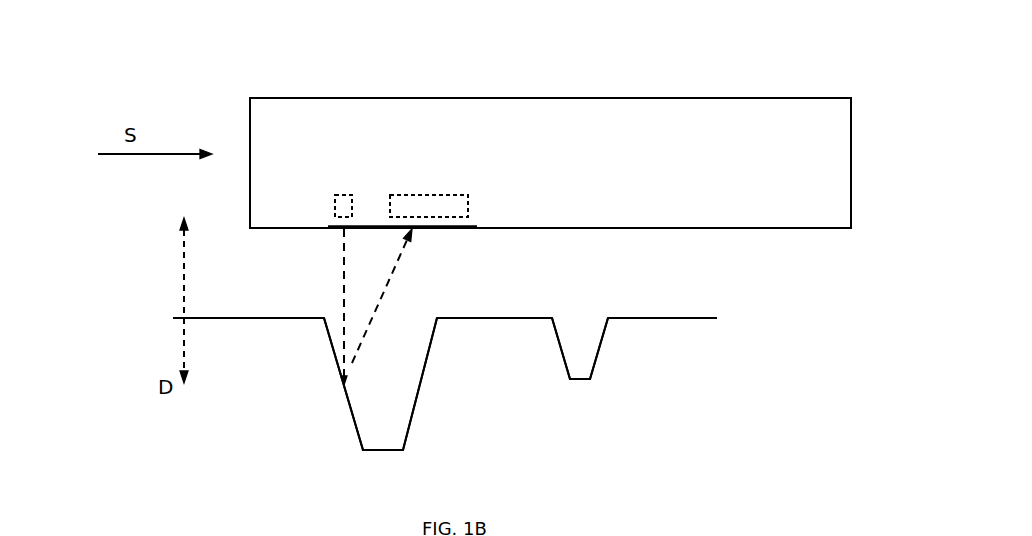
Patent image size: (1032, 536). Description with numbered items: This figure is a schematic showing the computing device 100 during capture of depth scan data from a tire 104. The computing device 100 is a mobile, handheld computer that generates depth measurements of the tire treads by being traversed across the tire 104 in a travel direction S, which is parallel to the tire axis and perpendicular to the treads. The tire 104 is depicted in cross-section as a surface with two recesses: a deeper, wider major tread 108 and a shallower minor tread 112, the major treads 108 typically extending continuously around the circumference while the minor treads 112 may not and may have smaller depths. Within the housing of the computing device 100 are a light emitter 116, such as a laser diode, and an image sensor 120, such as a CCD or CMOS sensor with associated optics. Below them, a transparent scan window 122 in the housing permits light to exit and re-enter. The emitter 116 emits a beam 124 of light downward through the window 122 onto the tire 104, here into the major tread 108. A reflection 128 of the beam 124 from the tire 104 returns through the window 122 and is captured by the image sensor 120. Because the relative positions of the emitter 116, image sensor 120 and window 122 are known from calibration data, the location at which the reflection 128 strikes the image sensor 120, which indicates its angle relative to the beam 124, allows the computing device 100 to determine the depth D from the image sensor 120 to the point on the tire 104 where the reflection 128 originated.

The computing device 100 is at (770, 93).
The tire 104 is at (160, 312).
The major treads 108 is at (390, 452).
The minor treads 112 is at (578, 380).
The light emitter 116 is at (335, 208).
The image sensor 120 is at (467, 203).
The transparent scan window 122 is at (450, 230).
The beam 124 is at (347, 287).
The reflection 128 is at (373, 348).